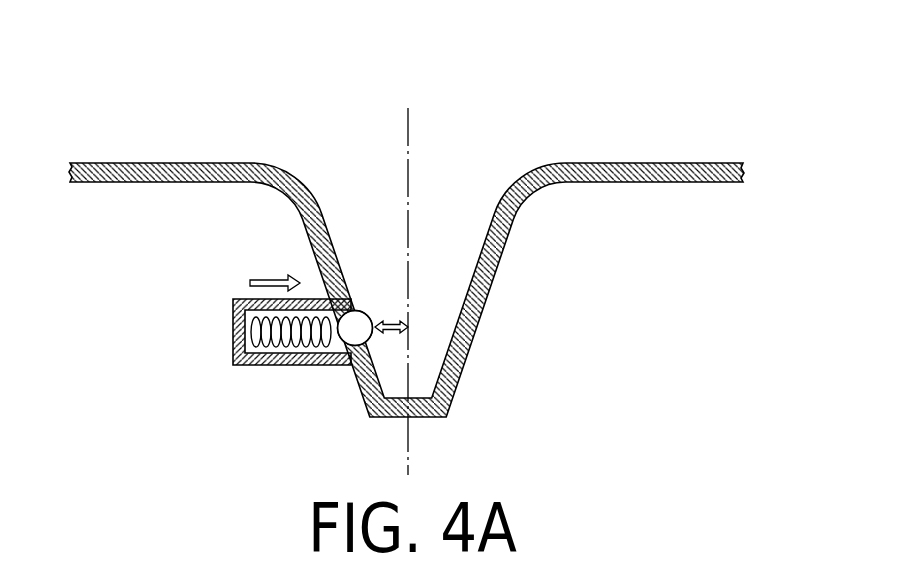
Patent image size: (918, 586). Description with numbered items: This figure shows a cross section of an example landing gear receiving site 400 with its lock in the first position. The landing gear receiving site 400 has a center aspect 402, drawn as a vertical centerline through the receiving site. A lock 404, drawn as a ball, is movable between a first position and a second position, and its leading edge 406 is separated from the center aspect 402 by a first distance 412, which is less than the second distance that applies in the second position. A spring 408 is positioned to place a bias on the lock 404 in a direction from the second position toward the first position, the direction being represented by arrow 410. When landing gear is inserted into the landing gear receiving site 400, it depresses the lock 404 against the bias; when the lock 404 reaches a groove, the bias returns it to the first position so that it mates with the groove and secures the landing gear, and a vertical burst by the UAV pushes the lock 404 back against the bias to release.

The landing gear receiving site 400 is at (136, 60).
The center aspect 402 is at (408, 118).
The lock 404 is at (336, 349).
The leading edge 406 is at (367, 312).
The spring 408 is at (247, 318).
The arrow 410 is at (272, 276).
The first distance 412 is at (392, 319).